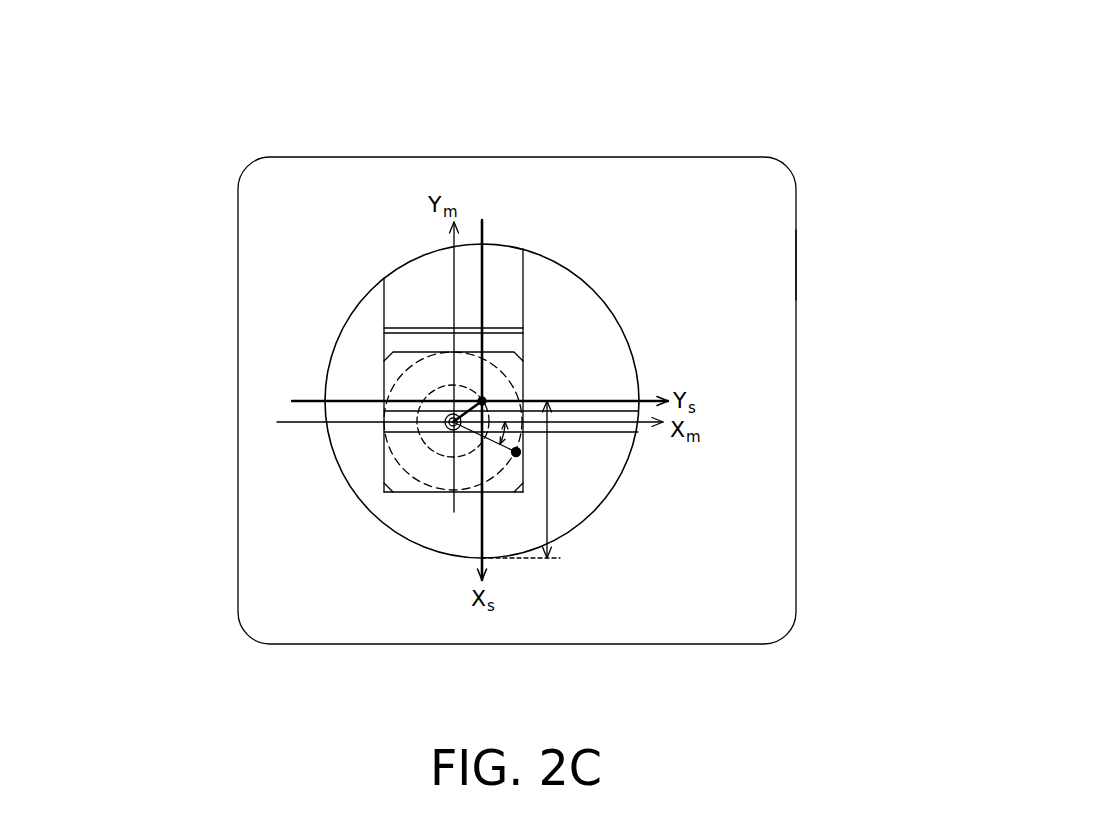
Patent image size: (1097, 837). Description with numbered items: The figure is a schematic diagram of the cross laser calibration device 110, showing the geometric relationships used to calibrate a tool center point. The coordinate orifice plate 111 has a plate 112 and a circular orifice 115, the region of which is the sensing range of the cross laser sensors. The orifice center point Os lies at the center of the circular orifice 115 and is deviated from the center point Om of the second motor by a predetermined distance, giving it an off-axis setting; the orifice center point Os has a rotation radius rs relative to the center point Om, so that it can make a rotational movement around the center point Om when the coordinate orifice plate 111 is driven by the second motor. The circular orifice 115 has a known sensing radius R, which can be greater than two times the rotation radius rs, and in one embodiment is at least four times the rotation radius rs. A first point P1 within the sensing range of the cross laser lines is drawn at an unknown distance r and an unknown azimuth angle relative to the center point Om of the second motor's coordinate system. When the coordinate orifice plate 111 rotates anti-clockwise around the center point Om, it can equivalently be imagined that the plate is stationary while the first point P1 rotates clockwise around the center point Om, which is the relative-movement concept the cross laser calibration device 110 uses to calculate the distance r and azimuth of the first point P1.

The cross laser calibration device 110 is at (886, 41).
The coordinate orifice plate 111 is at (331, 134).
The plate 112 is at (772, 266).
The circular orifice 115 is at (602, 502).
The center point of the second motor Om is at (446, 426).
The orifice center point Os is at (481, 405).
The first point P1 is at (521, 452).
The sensing radius R is at (550, 512).
The distance r is at (478, 436).
The rotation radius rs is at (480, 399).